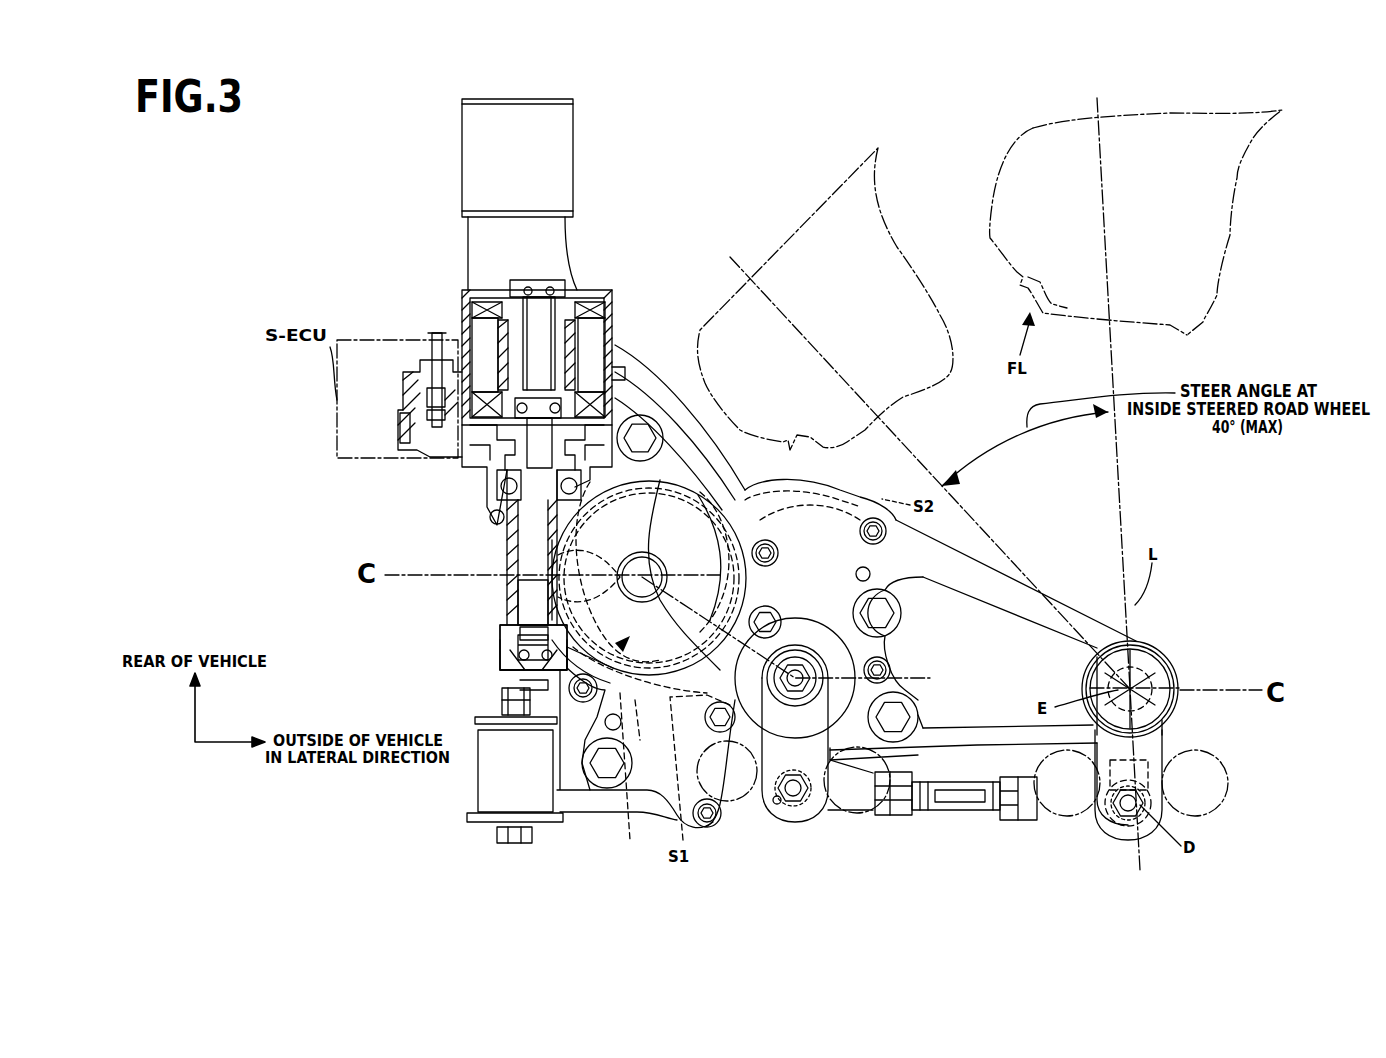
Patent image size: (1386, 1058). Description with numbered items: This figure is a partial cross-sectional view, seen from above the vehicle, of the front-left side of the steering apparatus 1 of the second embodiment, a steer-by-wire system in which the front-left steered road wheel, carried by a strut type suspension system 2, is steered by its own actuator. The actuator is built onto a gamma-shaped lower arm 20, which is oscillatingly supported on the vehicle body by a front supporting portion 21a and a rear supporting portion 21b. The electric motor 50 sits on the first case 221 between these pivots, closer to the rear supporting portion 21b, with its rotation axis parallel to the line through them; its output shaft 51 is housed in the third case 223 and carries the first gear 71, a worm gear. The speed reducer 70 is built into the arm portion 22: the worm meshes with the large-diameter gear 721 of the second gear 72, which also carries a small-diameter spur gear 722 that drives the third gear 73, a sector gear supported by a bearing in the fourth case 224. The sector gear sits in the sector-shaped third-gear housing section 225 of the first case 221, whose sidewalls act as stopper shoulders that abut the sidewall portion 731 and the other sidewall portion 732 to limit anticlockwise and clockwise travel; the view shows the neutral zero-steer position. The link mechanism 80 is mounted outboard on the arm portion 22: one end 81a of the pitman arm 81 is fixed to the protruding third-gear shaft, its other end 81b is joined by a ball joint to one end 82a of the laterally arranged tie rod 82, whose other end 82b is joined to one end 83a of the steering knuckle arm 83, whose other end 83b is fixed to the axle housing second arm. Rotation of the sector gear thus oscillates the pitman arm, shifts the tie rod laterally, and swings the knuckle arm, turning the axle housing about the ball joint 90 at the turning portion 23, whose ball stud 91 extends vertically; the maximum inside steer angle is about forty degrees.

The steering apparatus 1 is at (484, 657).
The suspension system 2 is at (660, 290).
The lower arm 20 is at (940, 566).
The front supporting portion 21a is at (478, 778).
The rear supporting portion 21b is at (462, 158).
The arm portion 22 is at (727, 482).
The turning portion 23 is at (1141, 641).
The electric motor 50 is at (465, 315).
The motor output shaft 51 is at (522, 523).
The speed reducer 70 is at (413, 585).
The first gear 71 is at (527, 598).
The second gear 72 is at (530, 610).
The third gear 73 is at (538, 625).
The link mechanism 80 is at (988, 845).
The pitman arm 81 is at (882, 812).
The one end of pitman arm 81a is at (780, 808).
The other end of pitman arm 81b is at (790, 825).
The tie rod 82 is at (958, 806).
The one end of tie rod 82a is at (832, 806).
The other end of tie rod 82b is at (1110, 815).
The steering knuckle arm 83 is at (990, 812).
The one end of knuckle arm 83a is at (1148, 830).
The other end of knuckle arm 83b is at (1178, 710).
The ball joint 90 is at (1183, 678).
The ball stud 91 is at (1165, 660).
The first case 221 is at (680, 437).
The third case 223 is at (510, 560).
The fourth case 224 is at (905, 655).
The third-gear housing section 225 is at (858, 500).
The large-diameter gear 721 is at (667, 507).
The small-diameter spur gear 722 is at (658, 515).
The radially-extending sidewall portion of third gear 731 is at (635, 750).
The other radially-extending sidewall portion of third gear 732 is at (878, 418).